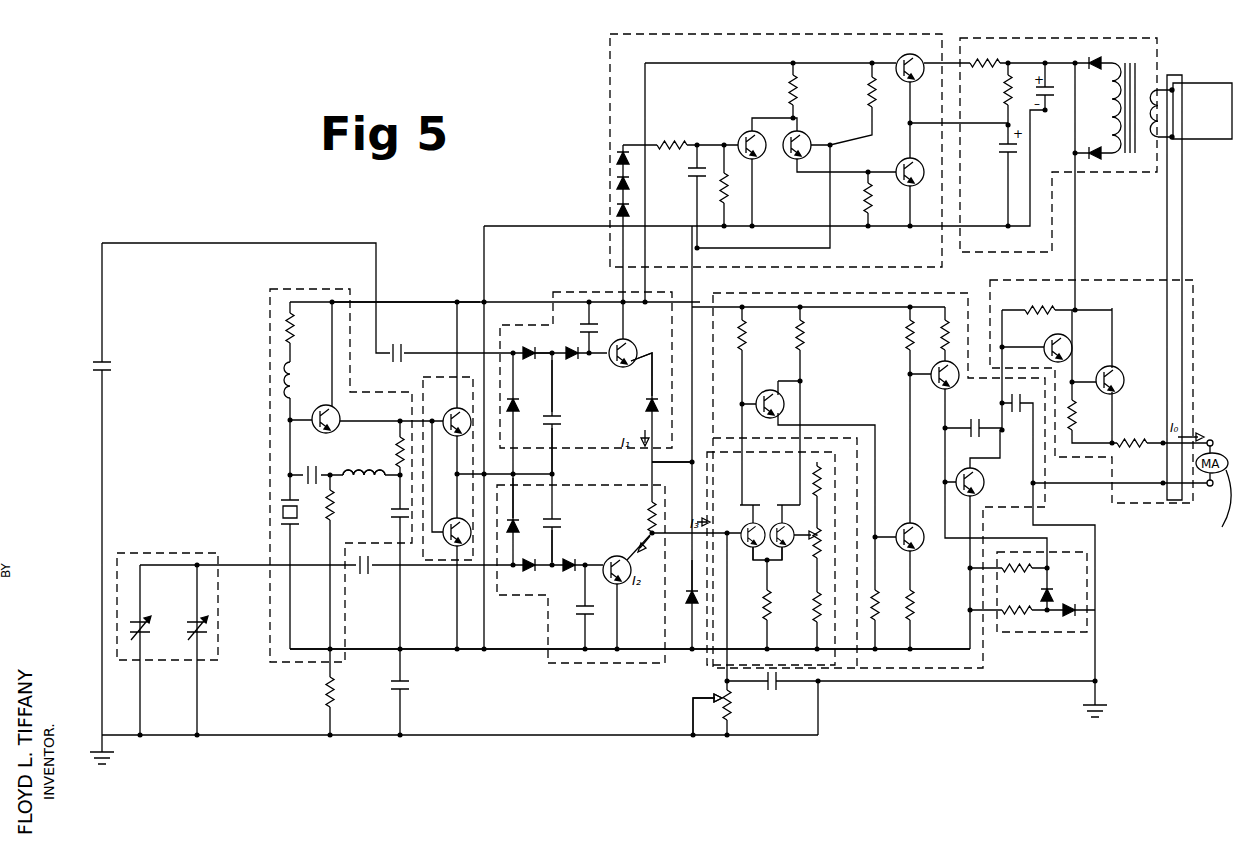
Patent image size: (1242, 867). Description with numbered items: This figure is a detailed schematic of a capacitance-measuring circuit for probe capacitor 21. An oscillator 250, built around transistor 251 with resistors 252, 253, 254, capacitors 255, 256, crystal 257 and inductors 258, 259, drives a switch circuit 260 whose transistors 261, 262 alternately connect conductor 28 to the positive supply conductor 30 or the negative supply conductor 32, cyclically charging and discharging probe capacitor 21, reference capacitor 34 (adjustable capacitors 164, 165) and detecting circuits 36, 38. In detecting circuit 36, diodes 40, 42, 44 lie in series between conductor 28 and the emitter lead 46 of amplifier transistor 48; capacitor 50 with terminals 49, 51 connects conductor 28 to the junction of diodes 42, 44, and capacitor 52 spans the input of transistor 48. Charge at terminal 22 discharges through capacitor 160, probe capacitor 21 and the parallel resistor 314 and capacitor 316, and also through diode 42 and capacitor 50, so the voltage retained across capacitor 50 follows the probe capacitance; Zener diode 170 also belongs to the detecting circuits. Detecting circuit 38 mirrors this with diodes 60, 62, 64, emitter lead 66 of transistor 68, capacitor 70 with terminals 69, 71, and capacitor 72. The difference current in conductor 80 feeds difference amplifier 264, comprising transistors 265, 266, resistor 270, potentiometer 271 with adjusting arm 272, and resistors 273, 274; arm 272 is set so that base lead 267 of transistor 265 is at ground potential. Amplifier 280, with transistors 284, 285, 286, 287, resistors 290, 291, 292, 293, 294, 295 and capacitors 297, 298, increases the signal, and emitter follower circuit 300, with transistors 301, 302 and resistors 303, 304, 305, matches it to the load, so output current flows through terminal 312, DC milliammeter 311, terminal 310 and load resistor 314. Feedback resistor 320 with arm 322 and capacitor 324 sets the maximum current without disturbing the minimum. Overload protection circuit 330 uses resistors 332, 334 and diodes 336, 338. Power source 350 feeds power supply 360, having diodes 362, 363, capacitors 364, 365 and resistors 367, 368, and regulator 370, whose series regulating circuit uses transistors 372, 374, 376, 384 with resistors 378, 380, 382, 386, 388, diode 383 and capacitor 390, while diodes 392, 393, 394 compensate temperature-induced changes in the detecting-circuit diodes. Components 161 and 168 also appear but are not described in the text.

The probe capacitor 21 is at (92, 366).
The terminal 22 is at (515, 353).
The conductor 28 is at (550, 474).
The positive supply conductor 30 is at (445, 300).
The negative supply conductor 32 is at (530, 655).
The reference capacitor 34 is at (165, 553).
The detecting circuit 36 is at (590, 292).
The detecting circuit 38 is at (527, 597).
The diode 40 is at (522, 408).
The diode 42 is at (537, 358).
The diode 44 is at (575, 360).
The emitter lead 46 is at (612, 368).
The amplifier transistor 48 is at (642, 375).
The terminal 49 is at (556, 437).
The capacitor 50 is at (564, 421).
The terminal 51 is at (556, 394).
The capacitor 52 is at (582, 322).
The diode 60 is at (520, 530).
The diode 62 is at (530, 570).
The diode 64 is at (569, 571).
The emitter lead 66 is at (605, 565).
The amplifier transistor 68 is at (648, 540).
The terminal 69 is at (517, 500).
The capacitor 70 is at (563, 523).
The terminal 71 is at (556, 549).
The capacitor 72 is at (595, 612).
The conductor 80 is at (688, 535).
The capacitor 160 is at (397, 344).
The capacitor 161 is at (366, 575).
The capacitor 164 is at (150, 618).
The capacitor 165 is at (192, 632).
The resistor 168 is at (646, 512).
The diode 170 is at (655, 400).
The oscillator 250 is at (270, 345).
The oscillator transistor 251 is at (341, 416).
The resistor 252 is at (294, 330).
The resistor 253 is at (345, 507).
The resistor 254 is at (394, 444).
The capacitor 255 is at (312, 467).
The capacitor 256 is at (392, 513).
The crystal 257 is at (270, 512).
The inductor 258 is at (307, 380).
The inductor 259 is at (360, 470).
The switch circuit 260 is at (440, 377).
The transistor 261 is at (444, 412).
The transistor 262 is at (455, 548).
The difference amplifier 264 is at (700, 462).
The transistor 265 is at (755, 557).
The transistor 266 is at (783, 556).
The base lead 267 is at (748, 524).
The resistor 270 is at (812, 478).
The potentiometer 271 is at (812, 548).
The adjusting arm 272 is at (786, 523).
The resistor 273 is at (812, 610).
The resistor 274 is at (764, 610).
The amplifier 280 is at (985, 660).
The transistor 284 is at (786, 403).
The transistor 285 is at (905, 524).
The transistor 286 is at (940, 388).
The transistor 287 is at (956, 480).
The resistor 290 is at (765, 332).
The resistor 291 is at (808, 335).
The resistor 292 is at (906, 333).
The resistor 293 is at (948, 318).
The resistor 294 is at (878, 605).
The resistor 295 is at (915, 602).
The capacitor 297 is at (980, 436).
The capacitor 298 is at (1017, 412).
The emitter follower circuit 300 is at (1193, 372).
The transistor 301 is at (1070, 342).
The transistor 302 is at (1120, 376).
The resistor 303 is at (1040, 305).
The resistor 304 is at (1132, 437).
The resistor 305 is at (1089, 415).
The output terminal 310 is at (1212, 487).
The DC milliammeter 311 is at (1221, 528).
The output terminal 312 is at (1220, 430).
The load resistor 314 is at (322, 692).
The capacitor 316 is at (412, 685).
The feedback resistor 320 is at (735, 712).
The arm 322 is at (693, 710).
The capacitor 324 is at (778, 684).
The overload protection circuit 330 is at (1090, 554).
The resistor 332 is at (1018, 582).
The resistor 334 is at (1010, 618).
The diode 336 is at (1054, 598).
The diode 338 is at (1075, 606).
The power source 350 is at (1182, 85).
The power supply 360 is at (1030, 38).
The diode 362 is at (1094, 70).
The diode 363 is at (1093, 150).
The capacitor 364 is at (1055, 95).
The capacitor 365 is at (1000, 150).
The resistor 367 is at (1003, 97).
The resistor 368 is at (983, 70).
The regulator 370 is at (804, 34).
The transistor 372 is at (904, 82).
The transistor 374 is at (896, 166).
The transistor 376 is at (808, 137).
The resistor 378 is at (788, 92).
The resistor 380 is at (866, 98).
The resistor 382 is at (866, 195).
The diode 383 is at (688, 590).
The transistor 384 is at (740, 135).
The resistor 386 is at (728, 200).
The resistor 388 is at (672, 140).
The capacitor 390 is at (688, 172).
The diode 392 is at (616, 158).
The diode 393 is at (616, 183).
The diode 394 is at (616, 210).